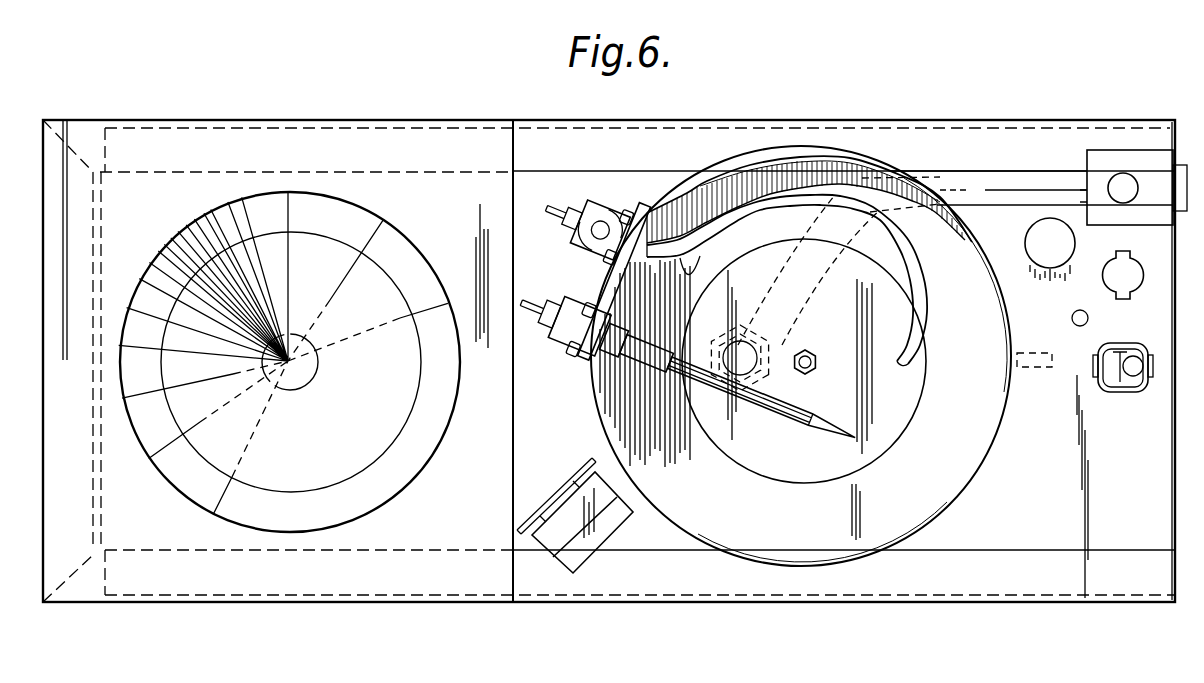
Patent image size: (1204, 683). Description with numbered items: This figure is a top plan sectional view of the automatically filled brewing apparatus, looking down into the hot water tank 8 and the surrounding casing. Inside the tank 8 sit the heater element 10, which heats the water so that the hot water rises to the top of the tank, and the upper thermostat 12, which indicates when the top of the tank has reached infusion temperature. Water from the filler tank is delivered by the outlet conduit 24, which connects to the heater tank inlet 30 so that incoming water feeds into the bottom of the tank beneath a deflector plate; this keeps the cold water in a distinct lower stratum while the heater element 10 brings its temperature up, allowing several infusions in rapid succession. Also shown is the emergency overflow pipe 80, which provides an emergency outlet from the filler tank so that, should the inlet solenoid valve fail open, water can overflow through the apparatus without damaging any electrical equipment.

The hot water tank 8 is at (1031, 462).
The heater element 10 is at (982, 288).
The upper thermostat 12 is at (813, 427).
The outlet conduit 24 is at (1112, 172).
The heater tank inlet 30 is at (847, 298).
The emergency overflow pipe 80 is at (1043, 270).